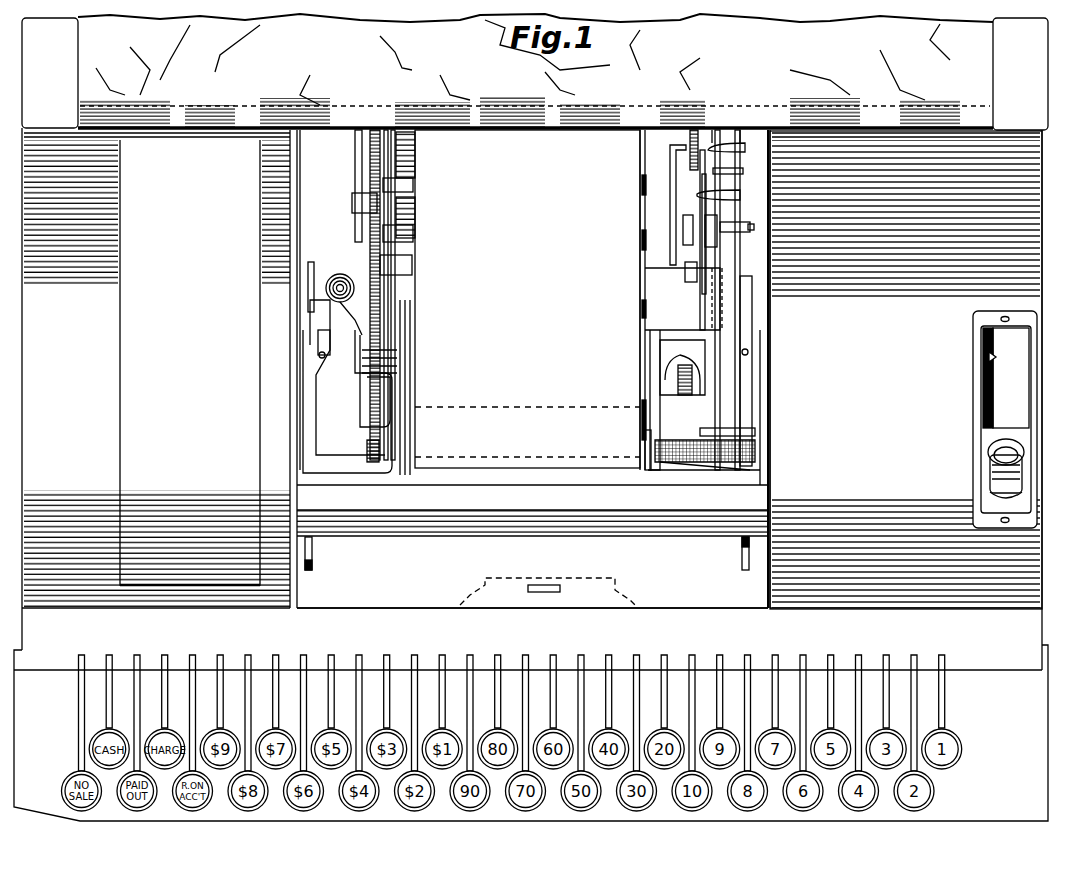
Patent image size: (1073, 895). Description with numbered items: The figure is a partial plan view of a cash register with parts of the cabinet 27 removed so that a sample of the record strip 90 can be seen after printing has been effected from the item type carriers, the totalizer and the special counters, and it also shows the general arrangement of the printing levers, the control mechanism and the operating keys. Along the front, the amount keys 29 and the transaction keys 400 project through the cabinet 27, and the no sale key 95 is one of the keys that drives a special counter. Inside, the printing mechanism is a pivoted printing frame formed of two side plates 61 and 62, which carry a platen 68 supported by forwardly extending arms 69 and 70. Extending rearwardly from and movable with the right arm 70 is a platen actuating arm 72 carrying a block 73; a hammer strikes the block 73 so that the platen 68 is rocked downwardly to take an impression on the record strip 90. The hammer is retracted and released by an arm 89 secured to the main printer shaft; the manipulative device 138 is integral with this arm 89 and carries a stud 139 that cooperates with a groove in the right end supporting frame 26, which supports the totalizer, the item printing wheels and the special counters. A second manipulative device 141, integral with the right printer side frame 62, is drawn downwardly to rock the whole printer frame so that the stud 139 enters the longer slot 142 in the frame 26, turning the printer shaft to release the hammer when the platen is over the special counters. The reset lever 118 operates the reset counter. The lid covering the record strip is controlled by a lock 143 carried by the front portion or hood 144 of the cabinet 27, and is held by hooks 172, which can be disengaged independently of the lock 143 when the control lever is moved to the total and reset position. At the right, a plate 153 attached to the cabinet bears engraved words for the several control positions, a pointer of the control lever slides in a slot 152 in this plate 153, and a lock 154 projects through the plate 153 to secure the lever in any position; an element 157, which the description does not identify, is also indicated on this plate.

The supporting frame 26 is at (685, 245).
The cabinet 27 is at (906, 382).
The amount keys 29 is at (326, 680).
The printer side plate 61 is at (368, 252).
The right printer side frame 62 is at (735, 298).
The platen 68 is at (648, 460).
The platen supporting arm 69 is at (398, 455).
The right platen supporting arm 70 is at (652, 470).
The platen actuating arm 72 is at (717, 230).
The block 73 is at (750, 227).
The arm 89 is at (686, 135).
The record strip 90 is at (525, 492).
The no sale key 95 is at (80, 685).
The reset lever 118 is at (672, 178).
The manipulative device 138 is at (730, 210).
The stud 139 is at (685, 240).
The manipulative device 141 is at (728, 145).
The slot 142 is at (697, 268).
The lock 143 is at (548, 600).
The front portion (hood) 144 is at (663, 608).
The slot 152 is at (983, 405).
The plate 153 is at (1030, 306).
The lock 154 is at (990, 456).
The pointer 157 is at (987, 357).
The hooks 172 is at (312, 550).
The transaction keys 400 is at (112, 678).